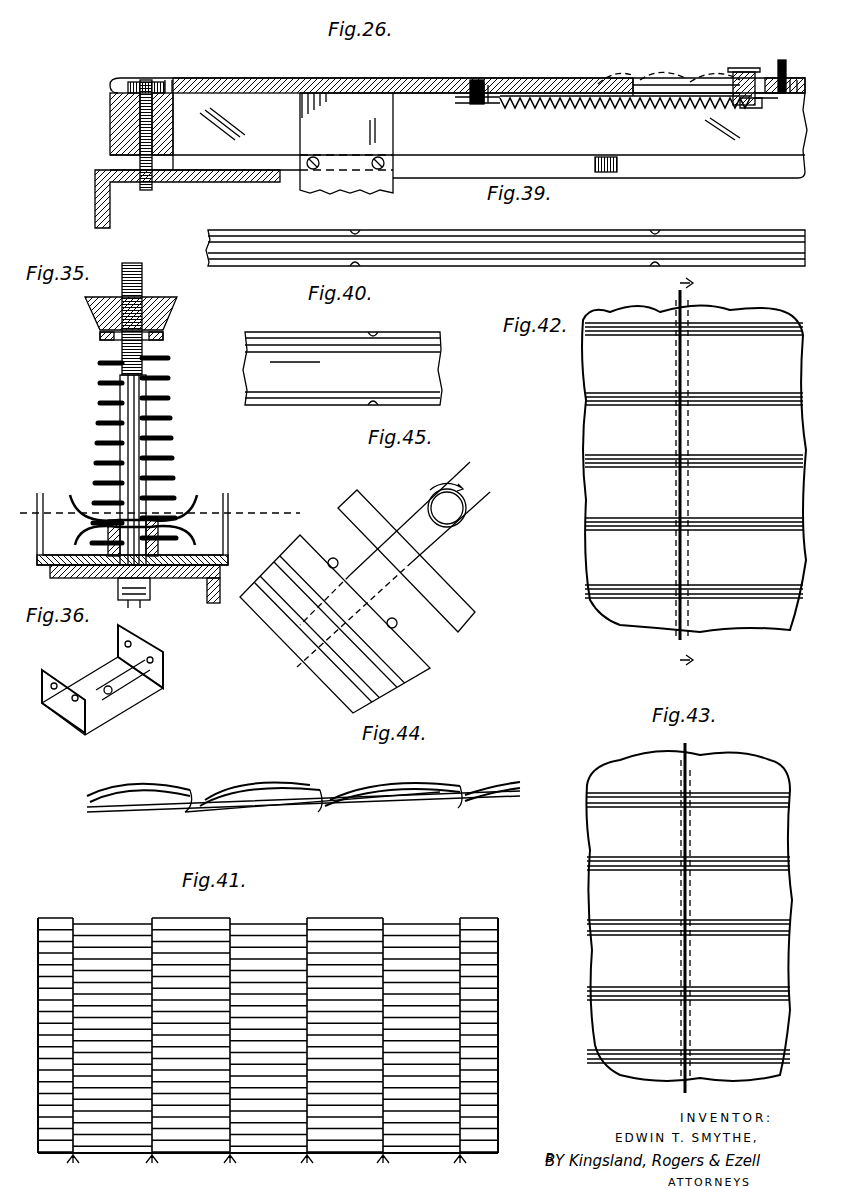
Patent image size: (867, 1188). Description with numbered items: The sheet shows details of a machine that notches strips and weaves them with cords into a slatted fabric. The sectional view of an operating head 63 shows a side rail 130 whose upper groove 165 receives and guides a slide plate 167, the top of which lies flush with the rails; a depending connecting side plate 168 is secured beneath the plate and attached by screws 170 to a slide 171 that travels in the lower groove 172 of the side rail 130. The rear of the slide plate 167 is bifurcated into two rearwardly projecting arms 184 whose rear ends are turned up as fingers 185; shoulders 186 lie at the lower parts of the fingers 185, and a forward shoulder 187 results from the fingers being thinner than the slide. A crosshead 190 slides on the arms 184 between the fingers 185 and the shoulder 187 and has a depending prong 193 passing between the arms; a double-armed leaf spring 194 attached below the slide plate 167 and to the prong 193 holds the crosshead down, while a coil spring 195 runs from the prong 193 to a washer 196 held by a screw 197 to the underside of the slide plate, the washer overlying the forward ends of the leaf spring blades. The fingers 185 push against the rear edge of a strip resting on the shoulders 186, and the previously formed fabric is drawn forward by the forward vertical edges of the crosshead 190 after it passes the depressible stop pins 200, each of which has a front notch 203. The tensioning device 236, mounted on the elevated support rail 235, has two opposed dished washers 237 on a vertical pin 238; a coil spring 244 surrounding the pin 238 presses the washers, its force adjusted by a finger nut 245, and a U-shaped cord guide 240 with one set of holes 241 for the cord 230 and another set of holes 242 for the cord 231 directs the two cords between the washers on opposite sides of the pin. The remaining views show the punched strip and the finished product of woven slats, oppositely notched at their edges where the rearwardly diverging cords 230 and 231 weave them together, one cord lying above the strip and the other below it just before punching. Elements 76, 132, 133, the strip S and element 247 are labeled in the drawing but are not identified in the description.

In FIG. 26, the head 63 is at (102, 110).
In FIG. 26, the angle support 76 is at (95, 200).
In FIG. 26, the side rail 130 is at (225, 100).
In FIG. 26, the side block 132 is at (115, 130).
In FIG. 26, the bolt 133 is at (130, 78).
In FIG. 26, the upper groove 165 is at (170, 80).
In FIG. 26, the slide plate 167 is at (287, 83).
In FIG. 26, the connecting side plate 168 is at (385, 140).
In FIG. 26, the screws 170 is at (318, 168).
In FIG. 26, the slide 171 is at (258, 165).
In FIG. 26, the lower groove 172 is at (610, 165).
In FIG. 26, the rearwardly projecting arms 184 is at (670, 90).
In FIG. 26, the fingers 185 is at (782, 58).
In FIG. 26, the shoulders 186 is at (765, 95).
In FIG. 26, the shoulder 187 is at (640, 80).
In FIG. 26, the crosshead 190 is at (748, 68).
In FIG. 26, the depending prong 193 is at (750, 106).
In FIG. 26, the double-armed leaf spring 194 is at (603, 90).
In FIG. 26, the coil spring 195 is at (633, 110).
In FIG. 26, the washer 196 is at (473, 80).
In FIG. 26, the screw 197 is at (482, 80).
In FIG. 39, the strip S is at (462, 258).
In FIG. 40, the strip S is at (425, 366).
In FIG. 45, the depressible stop pins 200 is at (338, 563).
In FIG. 45, the front notch 203 is at (332, 557).
In FIG. 45, the cord 230 is at (338, 505).
In FIG. 42, the cord 230 is at (678, 298).
In FIG. 43, the cord 230 is at (690, 782).
In FIG. 44, the cord 230 is at (128, 810).
In FIG. 41, the cord 230 is at (73, 930).
In FIG. 45, the cord 231 is at (440, 545).
In FIG. 42, the cord 231 is at (690, 323).
In FIG. 43, the cord 231 is at (688, 762).
In FIG. 44, the cord 231 is at (160, 785).
In FIG. 41, the cord 231 is at (80, 925).
In FIG. 35, the elevated support rail 235 is at (195, 578).
In FIG. 35, the tensioning device 236 is at (94, 358).
In FIG. 35, the dished washers 237 is at (195, 495).
In FIG. 35, the vertical pin 238 is at (140, 432).
In FIG. 35, the U-shaped cord guide 240 is at (228, 495).
In FIG. 36, the U-shaped cord guide 240 is at (140, 705).
In FIG. 35, the holes 241 is at (48, 500).
In FIG. 36, the holes 241 is at (125, 644).
In FIG. 36, the holes 242 is at (152, 660).
In FIG. 35, the coil spring 244 is at (95, 426).
In FIG. 35, the finger nut 245 is at (165, 305).
In FIG. 45, the ring 247 is at (466, 500).